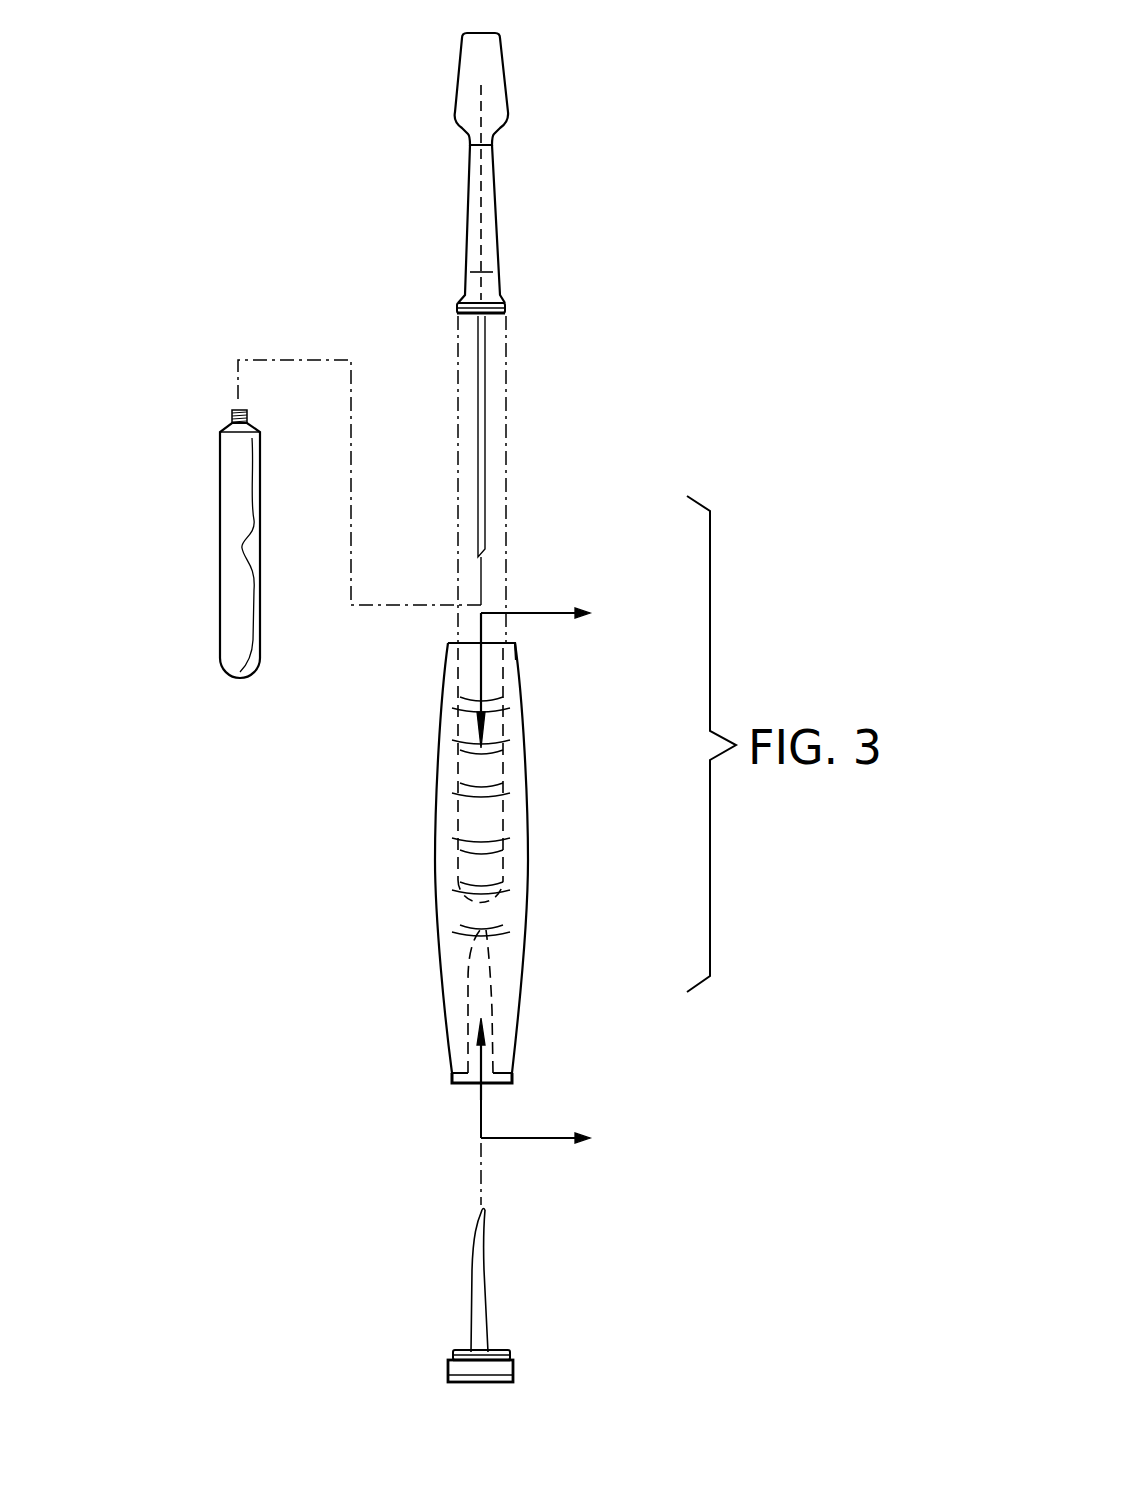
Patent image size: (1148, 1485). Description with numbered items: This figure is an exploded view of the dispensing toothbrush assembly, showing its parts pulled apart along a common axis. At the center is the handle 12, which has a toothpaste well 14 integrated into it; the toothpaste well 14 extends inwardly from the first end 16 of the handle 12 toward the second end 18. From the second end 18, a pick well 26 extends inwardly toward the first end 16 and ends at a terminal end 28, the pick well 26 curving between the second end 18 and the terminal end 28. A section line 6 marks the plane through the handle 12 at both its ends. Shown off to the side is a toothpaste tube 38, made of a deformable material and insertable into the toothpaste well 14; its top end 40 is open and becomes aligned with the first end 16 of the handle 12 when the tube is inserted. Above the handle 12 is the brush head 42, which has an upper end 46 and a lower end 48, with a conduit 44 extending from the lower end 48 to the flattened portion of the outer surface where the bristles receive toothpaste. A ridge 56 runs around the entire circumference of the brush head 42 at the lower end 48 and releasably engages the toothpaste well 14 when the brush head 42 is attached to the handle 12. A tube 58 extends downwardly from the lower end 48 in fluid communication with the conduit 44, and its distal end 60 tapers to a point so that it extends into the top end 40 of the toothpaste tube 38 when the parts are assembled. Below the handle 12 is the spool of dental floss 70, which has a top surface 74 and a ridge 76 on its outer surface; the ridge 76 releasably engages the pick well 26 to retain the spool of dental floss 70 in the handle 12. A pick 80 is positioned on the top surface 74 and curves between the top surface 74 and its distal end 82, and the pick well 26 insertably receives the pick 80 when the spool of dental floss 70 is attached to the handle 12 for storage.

The section line 6- 6 is at (548, 878).
The handle 12 is at (528, 882).
The toothpaste well 14 is at (478, 643).
The first end 16 is at (507, 643).
The second end 18 is at (450, 1085).
The pick well 26 is at (483, 1095).
The terminal end 28 is at (478, 930).
The toothpaste tube 38 is at (220, 528).
The top end 40 is at (232, 412).
The brush head 42 is at (506, 183).
The conduit 44 is at (482, 222).
The upper end 46 is at (480, 31).
The lower end 48 is at (458, 318).
The ridge 56 is at (506, 312).
The tube 58 is at (484, 425).
The distal end 60 is at (480, 555).
The spool of dental floss 70 is at (514, 1370).
The top surface 74 is at (462, 1352).
The ridge 76 is at (452, 1358).
The pick 80 is at (482, 1297).
The distal end 82 is at (484, 1212).